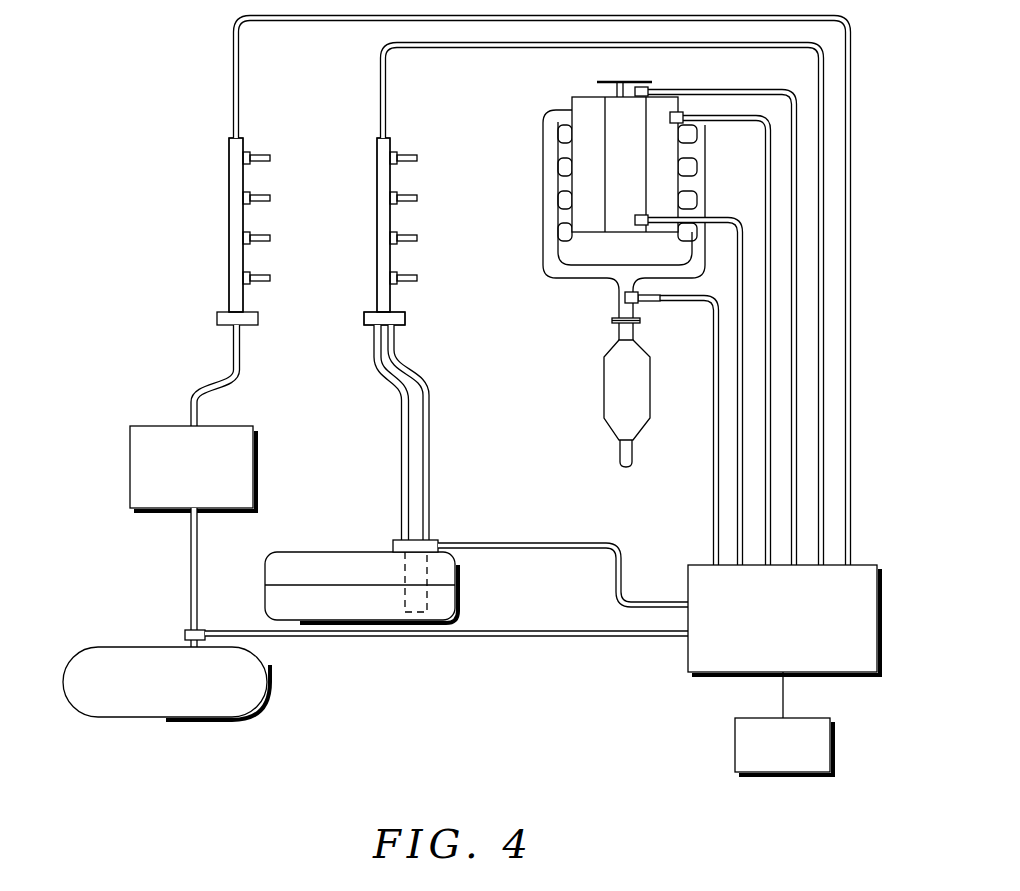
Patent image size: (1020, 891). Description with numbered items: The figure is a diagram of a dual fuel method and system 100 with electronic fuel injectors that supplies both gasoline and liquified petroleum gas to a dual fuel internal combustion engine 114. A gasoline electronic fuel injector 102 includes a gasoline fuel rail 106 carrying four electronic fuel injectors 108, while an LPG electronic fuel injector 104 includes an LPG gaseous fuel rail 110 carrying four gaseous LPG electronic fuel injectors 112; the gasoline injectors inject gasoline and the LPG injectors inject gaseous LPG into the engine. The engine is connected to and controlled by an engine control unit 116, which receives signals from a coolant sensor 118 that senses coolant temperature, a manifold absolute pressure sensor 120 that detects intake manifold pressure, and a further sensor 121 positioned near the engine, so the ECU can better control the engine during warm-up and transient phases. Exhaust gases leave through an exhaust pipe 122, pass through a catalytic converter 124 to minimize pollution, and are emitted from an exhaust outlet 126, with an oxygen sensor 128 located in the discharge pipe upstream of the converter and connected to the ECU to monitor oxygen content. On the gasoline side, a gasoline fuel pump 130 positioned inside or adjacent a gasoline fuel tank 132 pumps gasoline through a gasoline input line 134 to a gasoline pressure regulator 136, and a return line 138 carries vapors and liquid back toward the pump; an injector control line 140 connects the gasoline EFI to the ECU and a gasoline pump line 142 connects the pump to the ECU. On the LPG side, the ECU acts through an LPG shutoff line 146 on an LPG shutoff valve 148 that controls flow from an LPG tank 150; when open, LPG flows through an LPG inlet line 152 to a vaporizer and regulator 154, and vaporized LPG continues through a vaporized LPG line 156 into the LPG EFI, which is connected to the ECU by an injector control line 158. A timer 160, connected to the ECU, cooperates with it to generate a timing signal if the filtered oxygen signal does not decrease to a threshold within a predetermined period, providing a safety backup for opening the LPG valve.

The dual fuel method and system 100 is at (470, 410).
The gasoline electronic fuel injector (EFI) 102 is at (424, 241).
The LPG electronic fuel injector (EFI) 104 is at (274, 219).
The gasoline fuel rail 106 is at (377, 281).
The electronic fuel injectors 108 is at (414, 159).
The LPG gaseous fuel rail 110 is at (229, 268).
The gaseous LPG electronic fuel injectors 112 is at (268, 156).
The dual fuel internal combustion engine 114 is at (582, 106).
The engine control unit (ECU) 116 is at (700, 675).
The coolant sensor 118 is at (690, 128).
The manifold absolute pressure (MAP) sensor 120 is at (640, 227).
The throttle position sensor 121 is at (650, 82).
The exhaust pipe 122 is at (600, 284).
The catalytic converter 124 is at (604, 396).
The exhaust outlet 126 is at (620, 462).
The oxygen (O2) sensor 128 is at (652, 302).
The gasoline fuel pump 130 is at (393, 541).
The gasoline fuel tank 132 is at (455, 584).
The gasoline input line 134 is at (401, 472).
The gasoline pressure regulator 136 is at (405, 318).
The return line 138 is at (430, 452).
The injector control line 140 is at (380, 82).
The gasoline pump line 142 is at (538, 543).
The LPG shutoff line 146 is at (521, 637).
The LPG shutoff valve 148 is at (185, 633).
The LPG tank 150 is at (122, 716).
The LPG inlet line 152 is at (191, 560).
The vaporizer and regulator 154 is at (130, 466).
The vaporized LPG line 156 is at (213, 380).
The injector control line 158 is at (233, 76).
The timer 160 is at (740, 775).